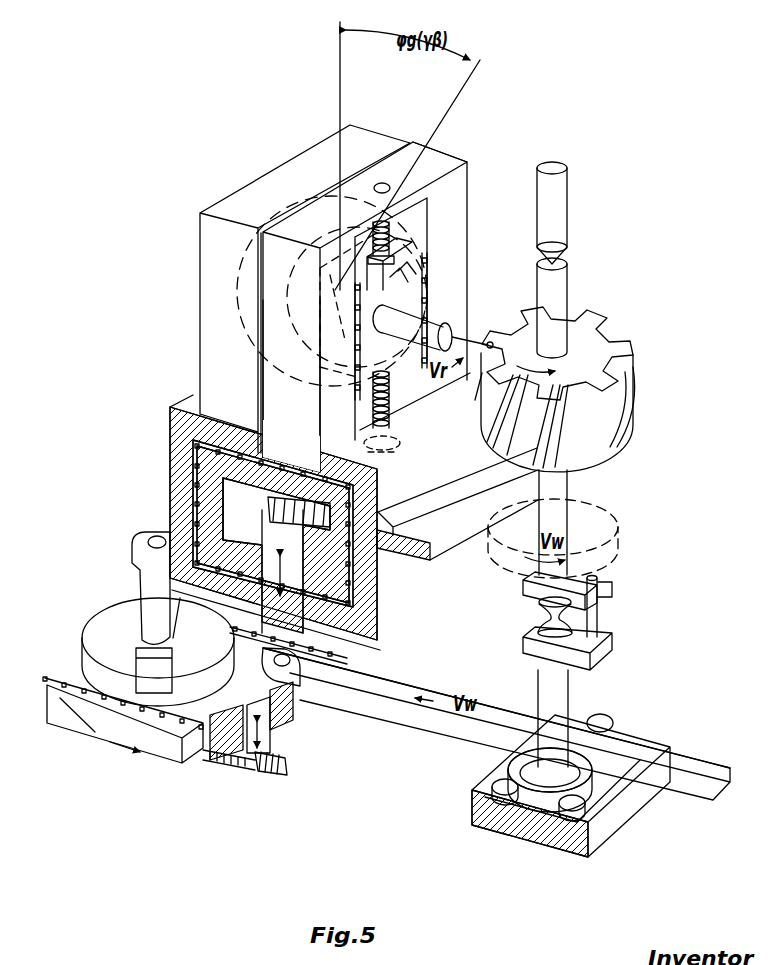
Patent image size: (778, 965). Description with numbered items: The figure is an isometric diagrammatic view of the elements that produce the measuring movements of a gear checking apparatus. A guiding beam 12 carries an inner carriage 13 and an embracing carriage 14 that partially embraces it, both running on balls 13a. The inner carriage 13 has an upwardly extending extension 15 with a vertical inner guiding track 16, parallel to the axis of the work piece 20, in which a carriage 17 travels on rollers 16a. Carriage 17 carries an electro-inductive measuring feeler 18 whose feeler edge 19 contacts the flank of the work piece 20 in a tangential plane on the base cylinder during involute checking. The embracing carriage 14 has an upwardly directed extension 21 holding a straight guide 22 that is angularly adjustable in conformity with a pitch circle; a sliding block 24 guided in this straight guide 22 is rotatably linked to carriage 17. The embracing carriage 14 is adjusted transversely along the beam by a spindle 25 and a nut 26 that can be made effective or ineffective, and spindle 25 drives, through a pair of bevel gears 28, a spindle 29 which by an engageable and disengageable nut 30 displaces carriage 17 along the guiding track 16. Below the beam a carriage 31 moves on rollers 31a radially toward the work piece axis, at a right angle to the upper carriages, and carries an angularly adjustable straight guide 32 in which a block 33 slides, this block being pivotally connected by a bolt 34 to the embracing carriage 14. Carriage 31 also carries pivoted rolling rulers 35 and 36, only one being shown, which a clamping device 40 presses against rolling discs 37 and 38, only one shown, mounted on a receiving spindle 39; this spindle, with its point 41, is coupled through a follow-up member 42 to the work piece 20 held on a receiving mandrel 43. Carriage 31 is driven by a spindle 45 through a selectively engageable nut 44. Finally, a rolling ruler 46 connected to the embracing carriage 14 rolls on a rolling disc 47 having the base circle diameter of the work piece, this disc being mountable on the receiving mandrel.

The guiding beam 12 is at (205, 522).
The inner carriage 13 is at (197, 452).
The balls 13a is at (197, 497).
The embracing carriage 14 is at (172, 420).
The extension 15 is at (430, 157).
The inner guiding track 16 is at (417, 211).
The rollers 16a is at (422, 268).
The carriage 17 is at (407, 291).
The electro-inductive measuring feeler 18 is at (443, 323).
The feeler edge 19 is at (485, 346).
The work piece 20 is at (607, 425).
The extension 21 is at (270, 195).
The straight guide 22 is at (327, 388).
The sliding block 24 is at (340, 312).
The spindle 25 is at (330, 507).
The nut 26 is at (337, 635).
The bevel gears 28 is at (385, 458).
The spindle 29 is at (385, 410).
The nut 30 is at (422, 250).
The carriage 31 is at (70, 668).
The rollers 31a is at (284, 670).
The straight guide 32 is at (163, 695).
The block 33 is at (148, 648).
The bolt 34 is at (157, 603).
The rolling ruler 35 is at (387, 690).
The rolling ruler 36 is at (496, 708).
The rolling disc 37 is at (537, 780).
The rolling disc 38 is at (539, 814).
The receiving spindle 39 is at (557, 695).
The clamping device 40 is at (598, 830).
The point 41 is at (548, 628).
The follow-up member 42 is at (612, 640).
The receiving mandrel 43 is at (556, 305).
The nut 44 is at (263, 738).
The spindle 45 is at (265, 775).
The rolling ruler 46 is at (443, 543).
The rolling disc 47 is at (600, 528).